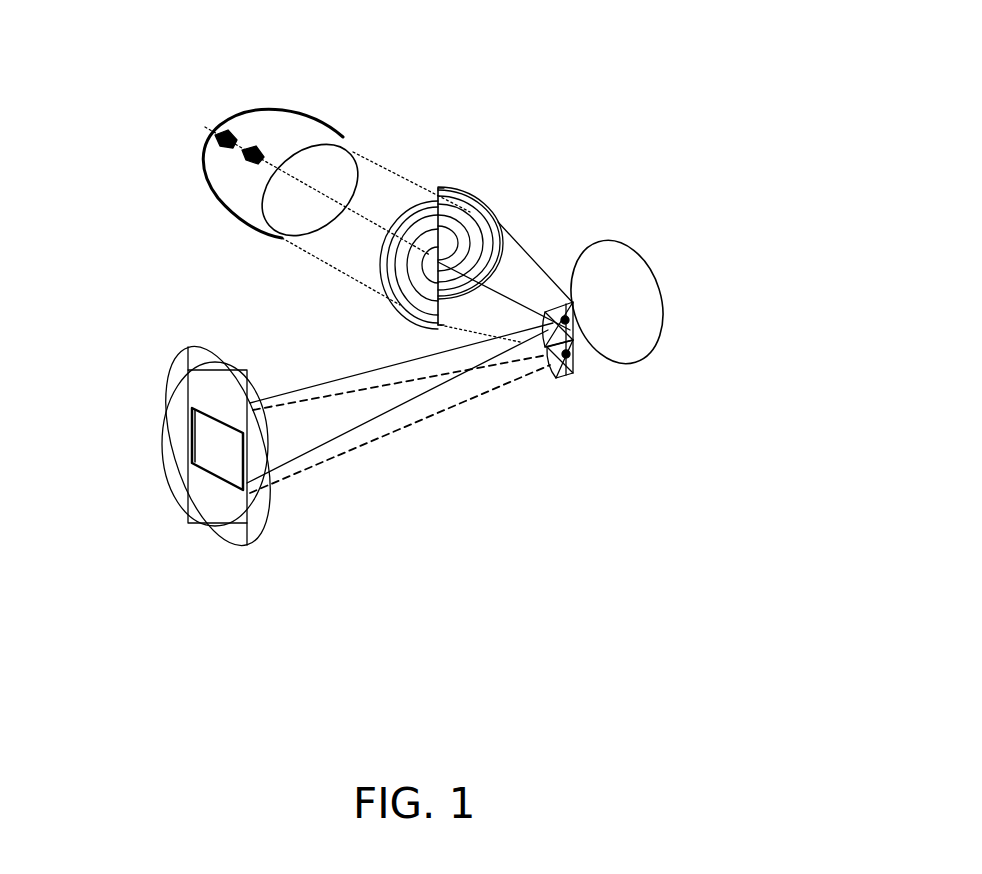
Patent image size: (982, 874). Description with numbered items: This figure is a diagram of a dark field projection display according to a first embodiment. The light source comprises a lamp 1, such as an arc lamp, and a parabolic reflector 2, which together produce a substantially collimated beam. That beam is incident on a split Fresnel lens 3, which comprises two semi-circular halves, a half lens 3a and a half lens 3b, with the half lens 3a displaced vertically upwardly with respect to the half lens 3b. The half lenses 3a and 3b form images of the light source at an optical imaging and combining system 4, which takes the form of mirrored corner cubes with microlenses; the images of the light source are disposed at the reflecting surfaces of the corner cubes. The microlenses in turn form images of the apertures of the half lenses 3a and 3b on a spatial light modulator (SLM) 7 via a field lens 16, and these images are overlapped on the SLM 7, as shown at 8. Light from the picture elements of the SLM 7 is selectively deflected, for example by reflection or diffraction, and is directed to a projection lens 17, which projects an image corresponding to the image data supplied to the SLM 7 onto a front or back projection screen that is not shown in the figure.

The lamp 1 is at (245, 143).
The parabolic reflector 2 is at (269, 201).
The split Fresnel lens 3 is at (468, 211).
The half lens 3a is at (502, 215).
The half lens 3b is at (380, 280).
The optical imaging and combining system 4 is at (620, 402).
The spatial light modulator (SLM) 7 is at (188, 451).
The overlapped images 8 is at (302, 593).
The field lens 16 is at (172, 392).
The projection lens 17 is at (665, 277).